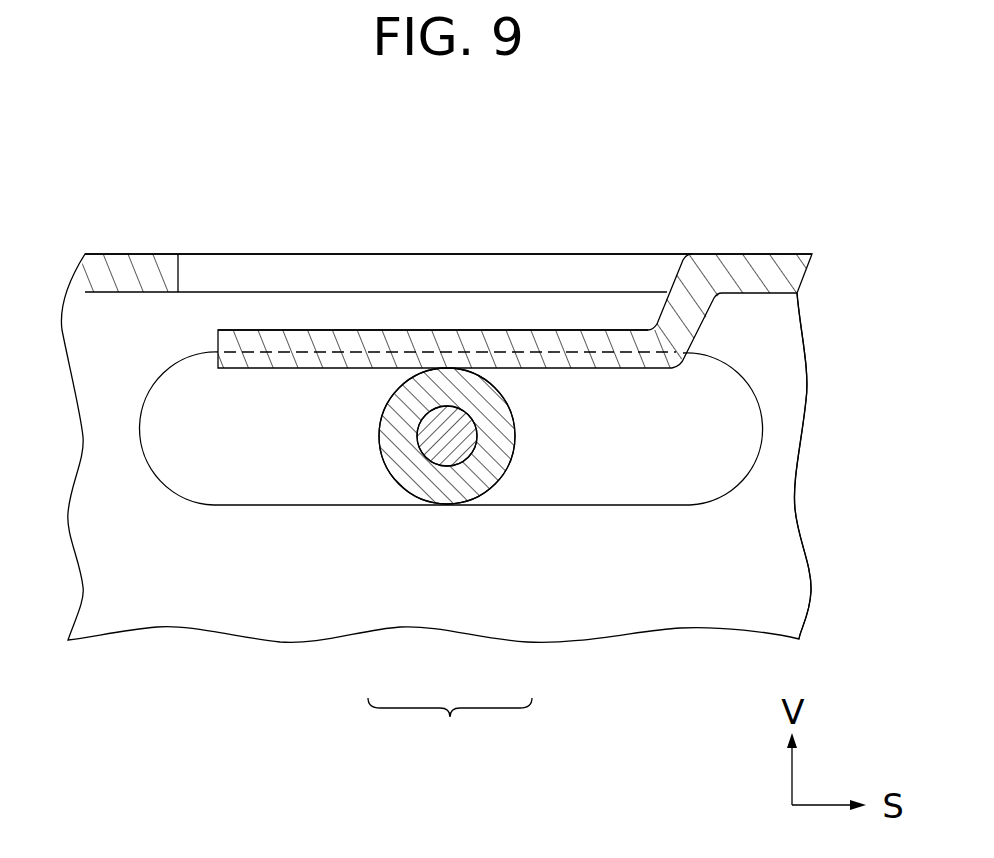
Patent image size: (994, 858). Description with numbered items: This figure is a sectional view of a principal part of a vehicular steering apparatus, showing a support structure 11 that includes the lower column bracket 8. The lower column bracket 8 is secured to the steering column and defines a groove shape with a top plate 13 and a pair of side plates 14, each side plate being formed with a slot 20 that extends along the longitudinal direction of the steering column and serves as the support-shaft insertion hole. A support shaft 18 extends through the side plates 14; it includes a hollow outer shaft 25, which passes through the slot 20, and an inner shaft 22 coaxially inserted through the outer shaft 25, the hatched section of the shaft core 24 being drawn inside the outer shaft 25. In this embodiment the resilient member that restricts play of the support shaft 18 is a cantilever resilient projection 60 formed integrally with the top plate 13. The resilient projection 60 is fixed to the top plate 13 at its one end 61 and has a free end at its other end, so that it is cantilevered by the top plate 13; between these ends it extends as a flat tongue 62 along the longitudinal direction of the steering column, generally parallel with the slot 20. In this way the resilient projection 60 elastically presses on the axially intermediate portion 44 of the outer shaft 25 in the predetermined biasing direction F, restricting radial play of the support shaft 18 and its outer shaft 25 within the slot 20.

The lower column bracket 8 is at (805, 348).
The support structure 11 is at (800, 232).
The top plate 13 is at (733, 265).
The side plates 14 is at (794, 446).
The support shaft 18 is at (450, 729).
The slot 20 is at (622, 505).
The inner shaft 22 is at (443, 453).
The solder 24 is at (445, 450).
The outer shaft 25 is at (472, 475).
The axially intermediate portion 44 is at (408, 468).
The resilient projection 60 is at (508, 318).
The one end 61 is at (690, 283).
The plate portion 62 is at (242, 340).
The biasing direction F is at (447, 355).